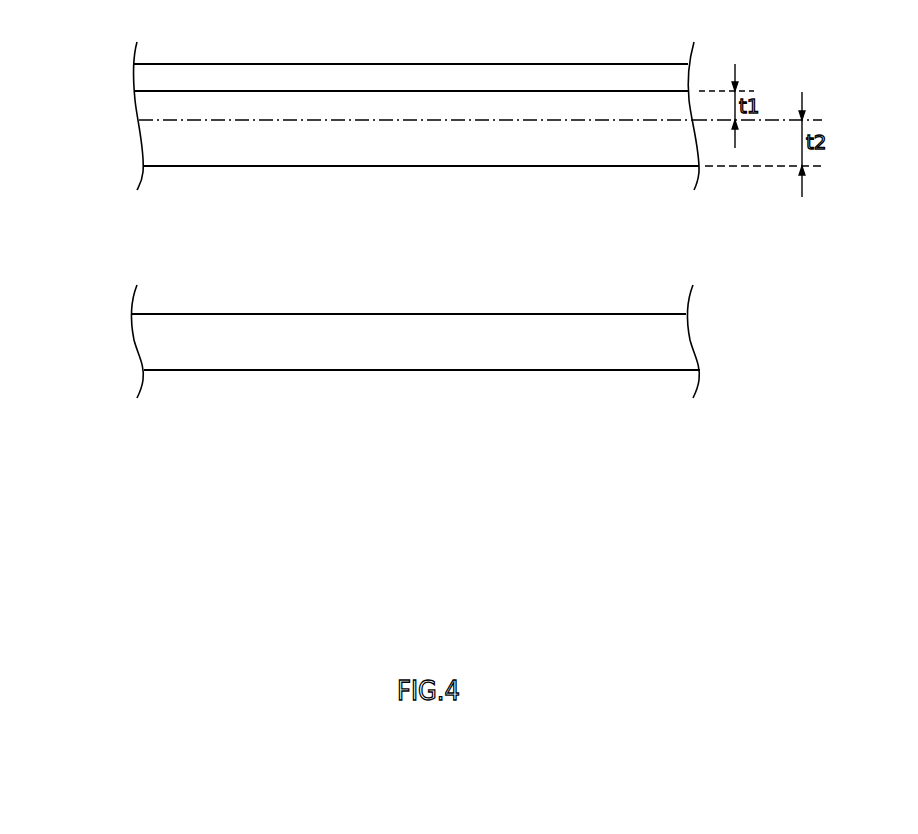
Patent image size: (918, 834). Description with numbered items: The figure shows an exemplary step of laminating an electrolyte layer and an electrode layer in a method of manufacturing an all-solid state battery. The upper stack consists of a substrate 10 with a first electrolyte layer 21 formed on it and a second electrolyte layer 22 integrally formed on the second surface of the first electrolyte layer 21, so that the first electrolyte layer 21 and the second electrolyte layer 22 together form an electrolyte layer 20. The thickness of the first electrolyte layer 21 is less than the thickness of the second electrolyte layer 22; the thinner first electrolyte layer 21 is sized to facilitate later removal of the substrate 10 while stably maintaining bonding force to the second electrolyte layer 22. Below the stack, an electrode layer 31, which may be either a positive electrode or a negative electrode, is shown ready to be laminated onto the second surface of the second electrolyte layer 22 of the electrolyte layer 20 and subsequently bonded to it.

The substrate 10 is at (572, 74).
The electrolyte layer 20 is at (366, 131).
The first electrolyte layer 21 is at (145, 105).
The second electrolyte layer 22 is at (145, 144).
The electrode layer 31 is at (573, 363).